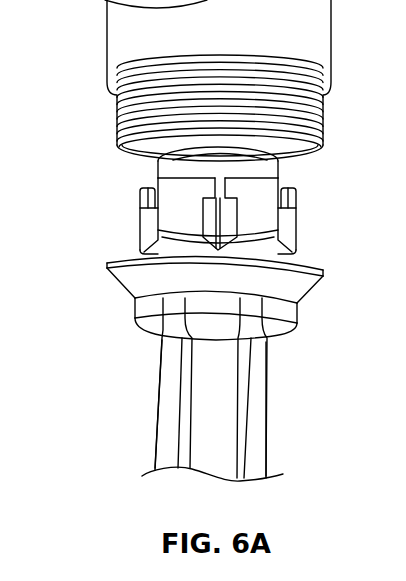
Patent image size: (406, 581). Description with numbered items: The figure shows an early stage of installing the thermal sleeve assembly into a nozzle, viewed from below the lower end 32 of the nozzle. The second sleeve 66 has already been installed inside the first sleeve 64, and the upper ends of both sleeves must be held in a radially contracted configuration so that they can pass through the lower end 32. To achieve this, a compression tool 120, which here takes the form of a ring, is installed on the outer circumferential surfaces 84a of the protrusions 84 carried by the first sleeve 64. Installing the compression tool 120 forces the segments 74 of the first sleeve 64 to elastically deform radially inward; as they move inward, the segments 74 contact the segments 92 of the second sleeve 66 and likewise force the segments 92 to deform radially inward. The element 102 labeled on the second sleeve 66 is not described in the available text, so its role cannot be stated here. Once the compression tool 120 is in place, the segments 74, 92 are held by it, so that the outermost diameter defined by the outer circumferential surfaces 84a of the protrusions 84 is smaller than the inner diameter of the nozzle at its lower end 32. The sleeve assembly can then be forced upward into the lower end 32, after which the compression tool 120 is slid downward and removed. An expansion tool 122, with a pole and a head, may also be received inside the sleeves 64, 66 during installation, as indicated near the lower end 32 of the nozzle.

The lower end of nozzle 32 is at (106, 125).
The expansion tool 122 is at (284, 154).
The clip body 102 is at (172, 199).
The segments of second sleeve 92 is at (298, 202).
The second sleeve 66 is at (198, 184).
The compression tool 120 is at (127, 280).
The outer circumferential surfaces of protrusions 84a is at (129, 317).
The protrusions 84 is at (132, 358).
The segments of first sleeve 74 is at (227, 433).
The first sleeve 64 is at (182, 368).